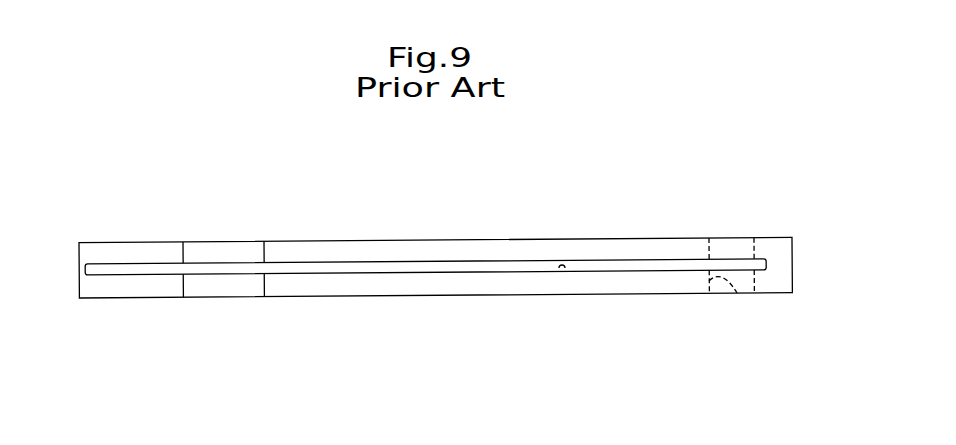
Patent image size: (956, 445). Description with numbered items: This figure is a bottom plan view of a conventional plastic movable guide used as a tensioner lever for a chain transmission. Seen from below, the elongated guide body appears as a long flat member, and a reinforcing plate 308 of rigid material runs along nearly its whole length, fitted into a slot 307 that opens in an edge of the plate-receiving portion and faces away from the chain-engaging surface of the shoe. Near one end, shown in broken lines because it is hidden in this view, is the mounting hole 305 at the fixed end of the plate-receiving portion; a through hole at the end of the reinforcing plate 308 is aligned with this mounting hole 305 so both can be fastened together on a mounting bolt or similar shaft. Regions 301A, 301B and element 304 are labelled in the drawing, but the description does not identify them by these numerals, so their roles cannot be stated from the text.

The housing 304 is at (439, 252).
The second connecting portion 301B is at (230, 236).
The first connecting portion 301A is at (739, 233).
The reinforcing plate 308 is at (522, 268).
The slot 307 is at (563, 268).
The mounting hole 305 is at (737, 293).